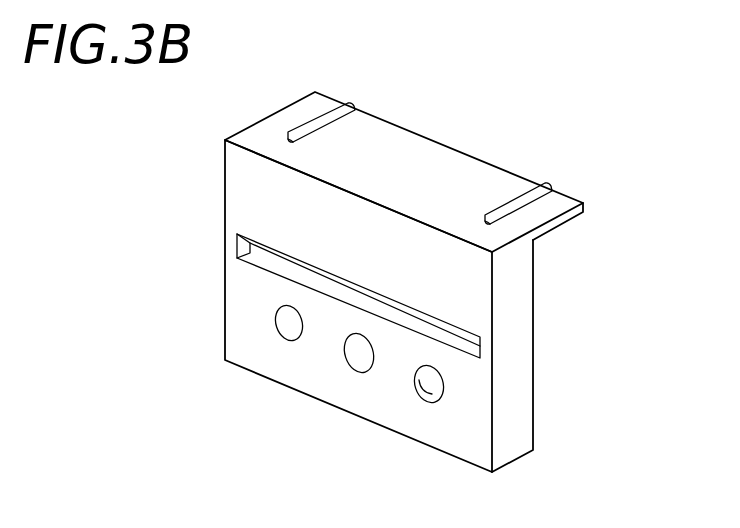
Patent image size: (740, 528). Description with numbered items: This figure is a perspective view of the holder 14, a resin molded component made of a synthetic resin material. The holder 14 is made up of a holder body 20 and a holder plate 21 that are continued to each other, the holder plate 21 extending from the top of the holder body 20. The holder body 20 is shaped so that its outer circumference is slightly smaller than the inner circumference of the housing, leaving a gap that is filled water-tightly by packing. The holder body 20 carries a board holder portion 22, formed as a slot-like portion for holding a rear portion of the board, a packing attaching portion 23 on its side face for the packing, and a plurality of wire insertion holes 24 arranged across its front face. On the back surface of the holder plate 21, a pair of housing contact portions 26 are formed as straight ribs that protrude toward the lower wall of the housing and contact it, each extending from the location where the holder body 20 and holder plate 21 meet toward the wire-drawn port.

The holder 14 is at (265, 398).
The holder body 20 is at (252, 206).
The holder plate 21 is at (428, 157).
The board holder portion 22 is at (262, 258).
The packing attaching portion 23 is at (512, 426).
The wire insertion holes 24 is at (430, 393).
The housing contact portions 26 is at (338, 106).